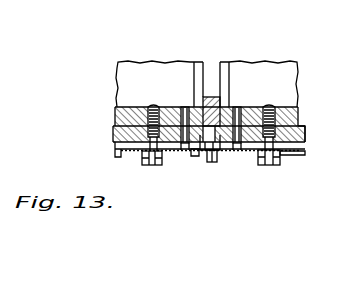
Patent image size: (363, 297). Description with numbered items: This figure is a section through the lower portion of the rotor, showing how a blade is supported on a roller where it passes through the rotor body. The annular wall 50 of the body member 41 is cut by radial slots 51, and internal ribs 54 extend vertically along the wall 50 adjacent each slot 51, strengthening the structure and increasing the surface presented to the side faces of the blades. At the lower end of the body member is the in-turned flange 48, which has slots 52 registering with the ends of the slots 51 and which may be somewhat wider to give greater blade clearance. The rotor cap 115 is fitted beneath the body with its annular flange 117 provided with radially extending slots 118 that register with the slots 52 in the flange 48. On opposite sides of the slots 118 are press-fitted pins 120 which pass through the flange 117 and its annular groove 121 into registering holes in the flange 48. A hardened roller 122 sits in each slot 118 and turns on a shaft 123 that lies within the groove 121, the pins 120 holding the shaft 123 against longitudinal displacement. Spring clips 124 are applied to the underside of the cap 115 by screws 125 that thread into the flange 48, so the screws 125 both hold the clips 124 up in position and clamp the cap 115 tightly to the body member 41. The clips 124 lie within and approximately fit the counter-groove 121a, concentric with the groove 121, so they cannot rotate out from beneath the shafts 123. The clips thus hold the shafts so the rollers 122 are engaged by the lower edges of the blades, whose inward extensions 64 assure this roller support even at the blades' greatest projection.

The body member 41 is at (277, 61).
The in-turned flange 48 is at (300, 117).
The annular wall 50 is at (128, 73).
The radial slot 51 is at (213, 62).
The slot 52 is at (231, 108).
The internal rib 54 is at (199, 62).
The inward extension of blade 64 is at (224, 104).
The rotor cap 115 is at (113, 139).
The annular flange 117 is at (115, 128).
The radially extending slot 118 is at (213, 163).
The press-fitted pin 120 is at (183, 107).
The annular groove 121 is at (113, 147).
The counter-groove 121a is at (114, 151).
The hardened roller 122 is at (205, 155).
The shaft 123 is at (195, 157).
The spring clip 124 is at (250, 153).
The screw 125 is at (261, 166).